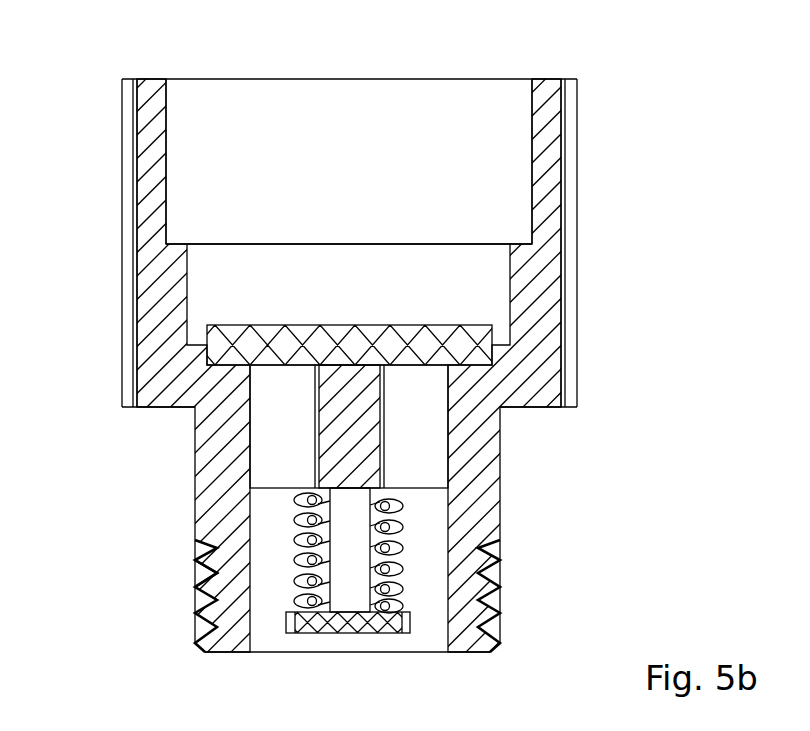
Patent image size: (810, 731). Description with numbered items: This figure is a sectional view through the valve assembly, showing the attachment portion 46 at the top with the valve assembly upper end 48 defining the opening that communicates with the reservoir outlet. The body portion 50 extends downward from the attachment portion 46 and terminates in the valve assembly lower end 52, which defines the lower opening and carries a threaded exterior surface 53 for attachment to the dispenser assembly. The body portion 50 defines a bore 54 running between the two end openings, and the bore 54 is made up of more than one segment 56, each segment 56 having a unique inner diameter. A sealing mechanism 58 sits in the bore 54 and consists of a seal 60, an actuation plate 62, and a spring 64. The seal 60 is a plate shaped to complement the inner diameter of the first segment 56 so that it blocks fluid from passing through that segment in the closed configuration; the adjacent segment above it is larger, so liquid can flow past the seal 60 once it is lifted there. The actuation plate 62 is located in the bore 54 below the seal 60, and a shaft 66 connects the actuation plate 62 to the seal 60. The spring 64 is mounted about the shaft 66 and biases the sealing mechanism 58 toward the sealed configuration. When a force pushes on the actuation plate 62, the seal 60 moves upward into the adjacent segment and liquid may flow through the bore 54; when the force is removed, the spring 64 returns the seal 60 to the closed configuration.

The attachment portion 46 is at (588, 172).
The upper end 48 is at (553, 80).
The body portion 50 is at (530, 462).
The valve assembly lower end 52 is at (185, 619).
The threaded exterior surface 53 is at (202, 574).
The bore 54 is at (195, 118).
The segment 56 is at (185, 305).
The sealing mechanism 58 is at (275, 447).
The seal 60 is at (288, 325).
The actuation plate 62 is at (362, 633).
The spring 64 is at (398, 575).
The shaft 66 is at (345, 545).